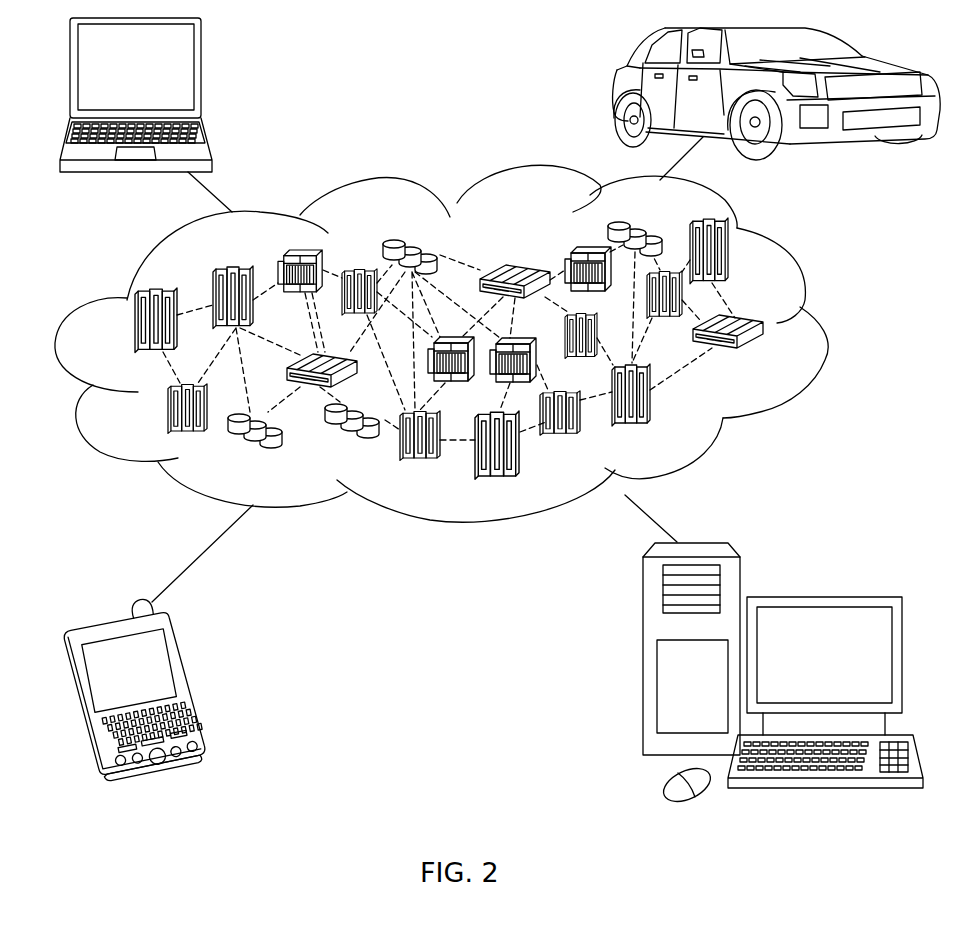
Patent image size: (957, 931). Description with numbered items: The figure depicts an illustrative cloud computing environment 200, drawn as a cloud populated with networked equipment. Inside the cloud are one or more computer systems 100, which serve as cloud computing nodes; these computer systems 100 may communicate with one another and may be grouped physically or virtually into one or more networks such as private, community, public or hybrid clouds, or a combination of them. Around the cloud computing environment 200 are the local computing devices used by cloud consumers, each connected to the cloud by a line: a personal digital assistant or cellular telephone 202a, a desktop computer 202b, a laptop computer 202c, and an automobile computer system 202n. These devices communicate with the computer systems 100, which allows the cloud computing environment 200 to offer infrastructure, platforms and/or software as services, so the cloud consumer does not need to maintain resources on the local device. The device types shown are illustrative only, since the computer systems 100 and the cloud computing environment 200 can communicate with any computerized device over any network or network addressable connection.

The computer system 100 is at (767, 357).
The cloud computing environment 200 is at (825, 330).
The personal digital assistant (PDA) or cellular telephone 202a is at (191, 681).
The desktop computer 202b is at (822, 597).
The laptop computer 202c is at (201, 75).
The automobile computer system 202n is at (613, 89).